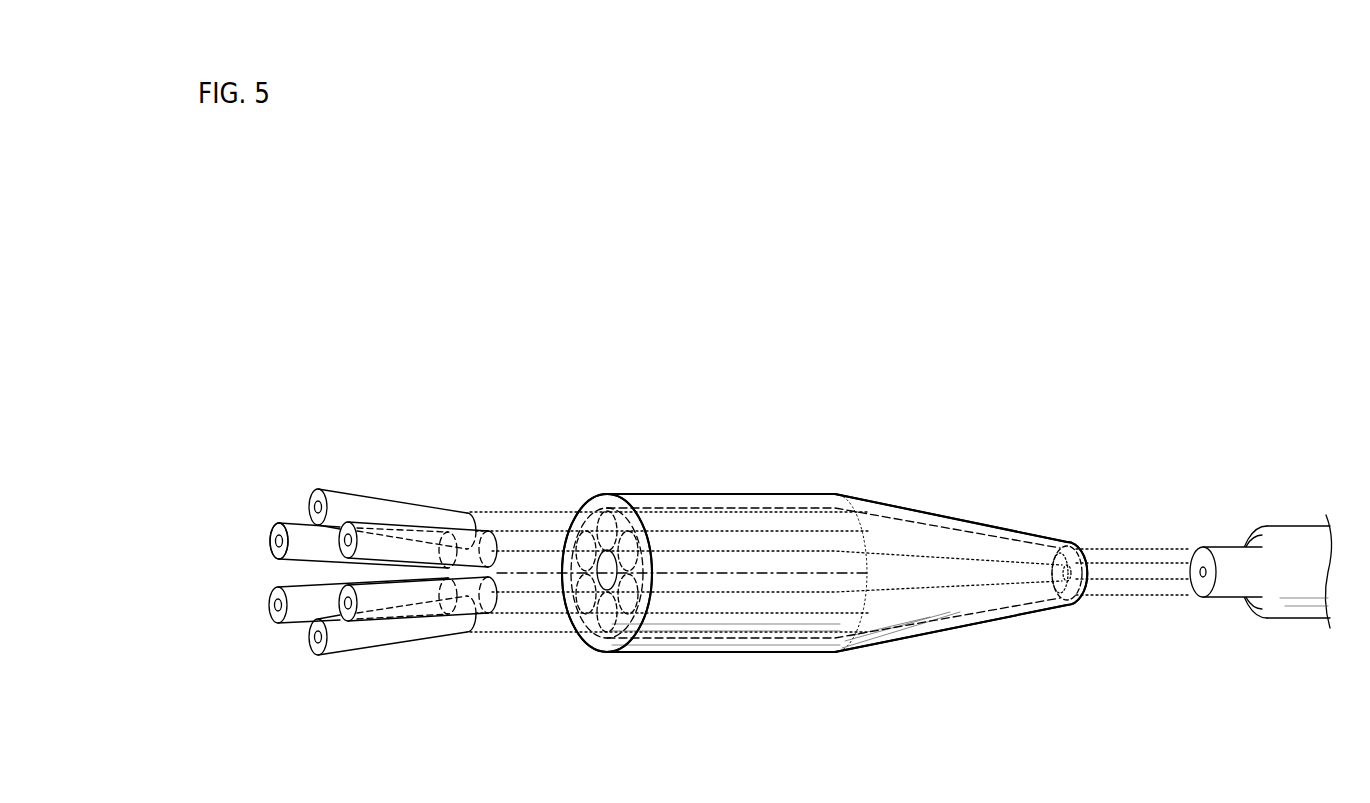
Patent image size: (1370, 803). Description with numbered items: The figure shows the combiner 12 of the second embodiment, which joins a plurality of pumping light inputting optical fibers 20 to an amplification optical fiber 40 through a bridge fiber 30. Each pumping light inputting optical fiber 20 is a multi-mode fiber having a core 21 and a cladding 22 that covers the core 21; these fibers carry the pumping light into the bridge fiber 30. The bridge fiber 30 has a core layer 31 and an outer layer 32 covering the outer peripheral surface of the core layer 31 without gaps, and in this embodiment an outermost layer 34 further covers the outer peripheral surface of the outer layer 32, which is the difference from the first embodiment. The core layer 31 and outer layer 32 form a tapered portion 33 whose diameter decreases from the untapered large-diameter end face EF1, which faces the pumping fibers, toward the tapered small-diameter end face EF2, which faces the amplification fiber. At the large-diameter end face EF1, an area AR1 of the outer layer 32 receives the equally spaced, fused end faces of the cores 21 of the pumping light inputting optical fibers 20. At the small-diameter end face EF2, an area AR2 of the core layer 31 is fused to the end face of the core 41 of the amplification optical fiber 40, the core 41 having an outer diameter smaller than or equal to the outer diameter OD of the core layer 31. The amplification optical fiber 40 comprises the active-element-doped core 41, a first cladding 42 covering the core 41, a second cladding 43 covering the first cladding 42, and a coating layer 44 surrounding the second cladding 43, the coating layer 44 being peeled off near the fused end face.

The combiner 12 is at (1086, 315).
The pumping light inputting optical fiber 20 is at (268, 490).
The core 21 is at (272, 541).
The cladding 22 is at (271, 533).
The bridge fiber 30 is at (653, 446).
The core layer 31 is at (612, 560).
The outer layer 32 is at (693, 507).
The tapered portion 33 is at (1067, 603).
The outermost layer 34 is at (770, 498).
The amplification optical fiber 40 is at (1202, 448).
The core 41 is at (1205, 568).
The first cladding 42 is at (1225, 557).
The second cladding 43 is at (1250, 543).
The coating layer 44 is at (1277, 537).
The area AR1 is at (622, 632).
The area AR2 is at (1065, 596).
The large-diameter end face EF1 is at (560, 630).
The small-diameter end face EF2 is at (1095, 598).
The outer diameter OD is at (1148, 607).